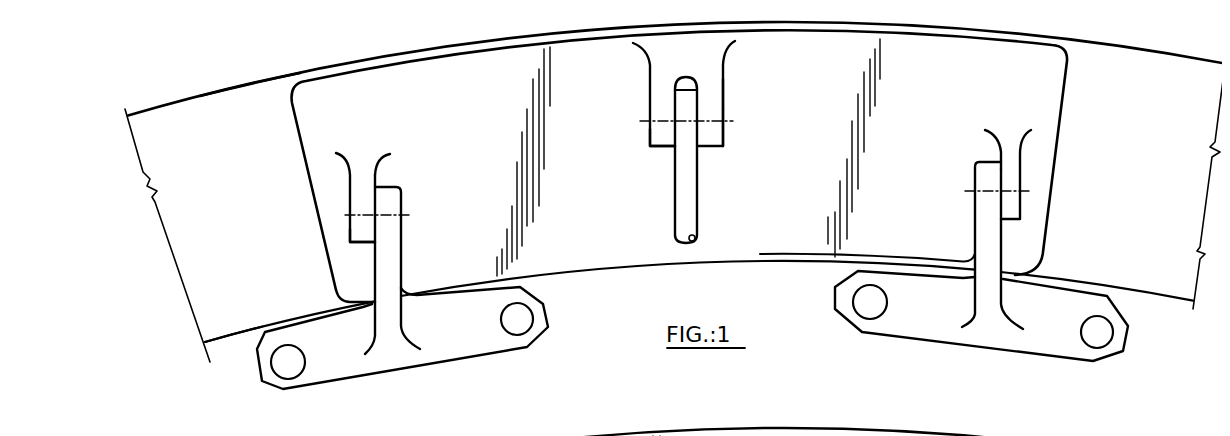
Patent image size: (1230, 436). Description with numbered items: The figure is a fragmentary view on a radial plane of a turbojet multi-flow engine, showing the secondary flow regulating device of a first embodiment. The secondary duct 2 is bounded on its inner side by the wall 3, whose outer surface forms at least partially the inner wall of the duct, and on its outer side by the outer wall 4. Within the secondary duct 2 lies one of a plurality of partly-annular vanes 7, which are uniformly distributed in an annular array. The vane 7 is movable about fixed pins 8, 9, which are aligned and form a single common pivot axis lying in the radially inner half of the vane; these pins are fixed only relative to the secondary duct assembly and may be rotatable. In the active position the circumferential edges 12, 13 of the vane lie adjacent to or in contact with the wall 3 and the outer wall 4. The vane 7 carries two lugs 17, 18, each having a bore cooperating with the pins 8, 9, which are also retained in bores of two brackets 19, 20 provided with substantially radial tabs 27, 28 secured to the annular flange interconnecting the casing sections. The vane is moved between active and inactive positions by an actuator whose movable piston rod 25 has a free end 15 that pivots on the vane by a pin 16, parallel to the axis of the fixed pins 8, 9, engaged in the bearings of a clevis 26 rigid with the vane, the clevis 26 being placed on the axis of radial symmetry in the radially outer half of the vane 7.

The secondary duct 2 is at (1162, 124).
The wall 3 is at (236, 336).
The outer wall 4 is at (233, 89).
The vane 7 is at (759, 199).
The fixed pin 8 is at (1023, 203).
The fixed pin 9 is at (356, 234).
The circumferential edge 12 is at (638, 267).
The circumferential edge 13 is at (677, 31).
The free end 15 is at (678, 130).
The pin 16 is at (728, 120).
The lug 17 is at (1012, 142).
The lug 18 is at (362, 165).
The bracket 19 is at (917, 317).
The bracket 20 is at (342, 369).
The piston rod 25 is at (682, 192).
The clevis 26 is at (712, 95).
The radial tab 27 is at (992, 218).
The radial tab 28 is at (388, 265).